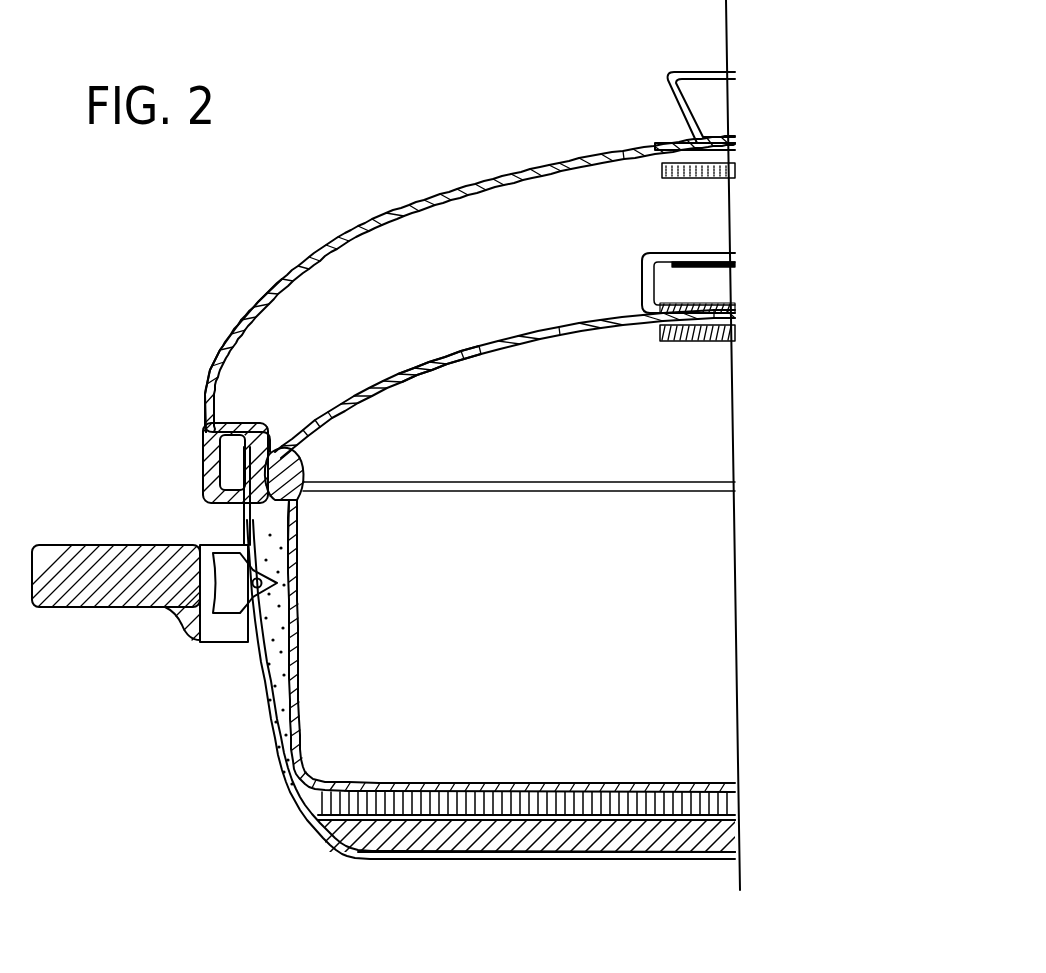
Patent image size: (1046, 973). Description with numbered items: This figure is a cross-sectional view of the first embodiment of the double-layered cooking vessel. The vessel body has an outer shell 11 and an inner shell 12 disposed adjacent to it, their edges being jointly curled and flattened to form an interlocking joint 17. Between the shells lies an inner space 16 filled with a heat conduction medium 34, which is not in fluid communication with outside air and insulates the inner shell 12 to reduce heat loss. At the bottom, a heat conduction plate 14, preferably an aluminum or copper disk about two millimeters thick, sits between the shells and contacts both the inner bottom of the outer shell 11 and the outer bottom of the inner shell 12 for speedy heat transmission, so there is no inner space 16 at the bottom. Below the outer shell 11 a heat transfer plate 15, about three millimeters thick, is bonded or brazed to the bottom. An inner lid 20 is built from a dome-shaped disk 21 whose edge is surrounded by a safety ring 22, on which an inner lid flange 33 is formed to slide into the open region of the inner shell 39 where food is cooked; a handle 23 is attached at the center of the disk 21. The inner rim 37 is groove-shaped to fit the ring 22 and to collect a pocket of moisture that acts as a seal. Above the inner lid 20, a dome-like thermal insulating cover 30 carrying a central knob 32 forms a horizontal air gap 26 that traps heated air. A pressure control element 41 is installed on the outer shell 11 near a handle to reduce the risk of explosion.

The outer shell 11 is at (273, 755).
The inner shell 12 is at (298, 690).
The heat conduction plate 14 is at (715, 800).
The heat transfer plate 15 is at (625, 858).
The inner space 16 is at (258, 516).
The interlocking joint 17 is at (205, 443).
The inner lid 20 is at (368, 392).
The dome-shaped disk 21 is at (428, 362).
The safety ring 22 is at (519, 515).
The handle 23 is at (697, 262).
The air gap 26 is at (497, 273).
The thermal insulating cover 30 is at (250, 320).
The knob 32 is at (668, 78).
The inner lid flange 33 is at (302, 490).
The heat conduction medium 34 is at (263, 625).
The inner rim 37 is at (290, 530).
The open region of the inner shell 39 is at (550, 756).
The pressure control element 41 is at (178, 612).